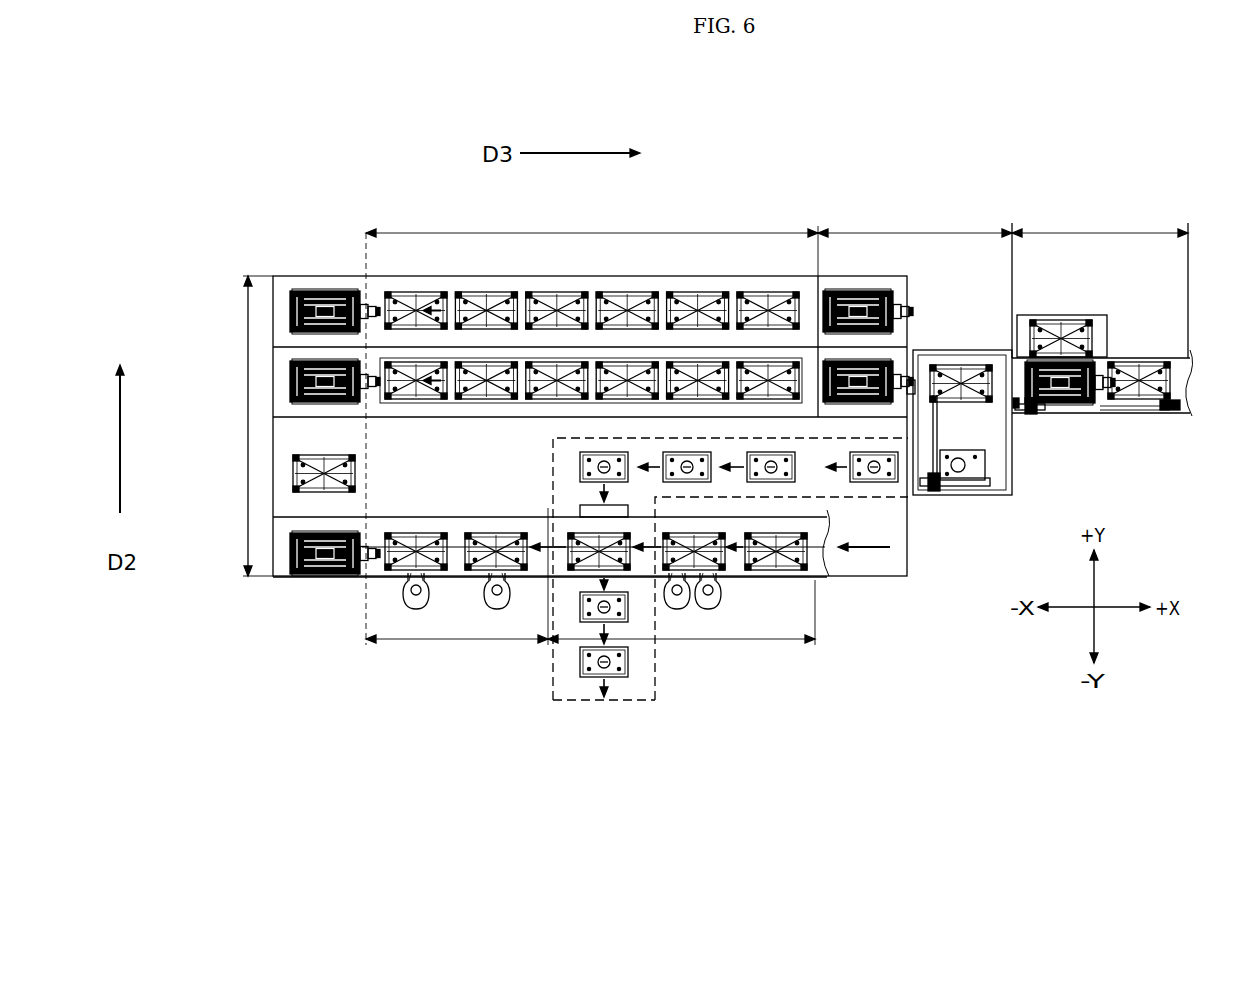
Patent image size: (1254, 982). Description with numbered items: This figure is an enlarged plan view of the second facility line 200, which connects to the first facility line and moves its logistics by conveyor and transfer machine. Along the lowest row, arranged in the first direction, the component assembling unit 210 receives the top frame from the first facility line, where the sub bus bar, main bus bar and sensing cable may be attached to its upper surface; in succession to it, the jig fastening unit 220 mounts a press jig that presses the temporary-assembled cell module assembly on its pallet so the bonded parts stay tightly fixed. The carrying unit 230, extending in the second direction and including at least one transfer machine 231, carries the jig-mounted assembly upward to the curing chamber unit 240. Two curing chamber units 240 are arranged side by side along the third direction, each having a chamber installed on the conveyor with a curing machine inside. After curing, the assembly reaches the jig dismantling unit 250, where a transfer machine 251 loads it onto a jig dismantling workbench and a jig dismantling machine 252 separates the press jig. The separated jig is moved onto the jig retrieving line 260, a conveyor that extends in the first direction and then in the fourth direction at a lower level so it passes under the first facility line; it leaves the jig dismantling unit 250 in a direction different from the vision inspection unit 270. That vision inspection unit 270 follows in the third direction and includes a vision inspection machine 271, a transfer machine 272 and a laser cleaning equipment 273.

The second facility line 200 is at (371, 187).
The component assembling unit 210 is at (728, 569).
The jig fastening unit 220 is at (555, 602).
The carrying unit 230 is at (557, 439).
The transfer machine 231 is at (303, 576).
The curing chamber unit 240 is at (554, 305).
The jig dismantling unit 250 is at (951, 350).
The transfer machine 251 is at (895, 306).
The jig dismantling machine 252 is at (966, 352).
The jig retrieving line 260 is at (1012, 472).
The vision inspection unit 270 is at (1102, 333).
The vision inspection machine 271 is at (1068, 412).
The transfer machine 272 is at (1043, 410).
The laser cleaning equipment 273 is at (1150, 408).